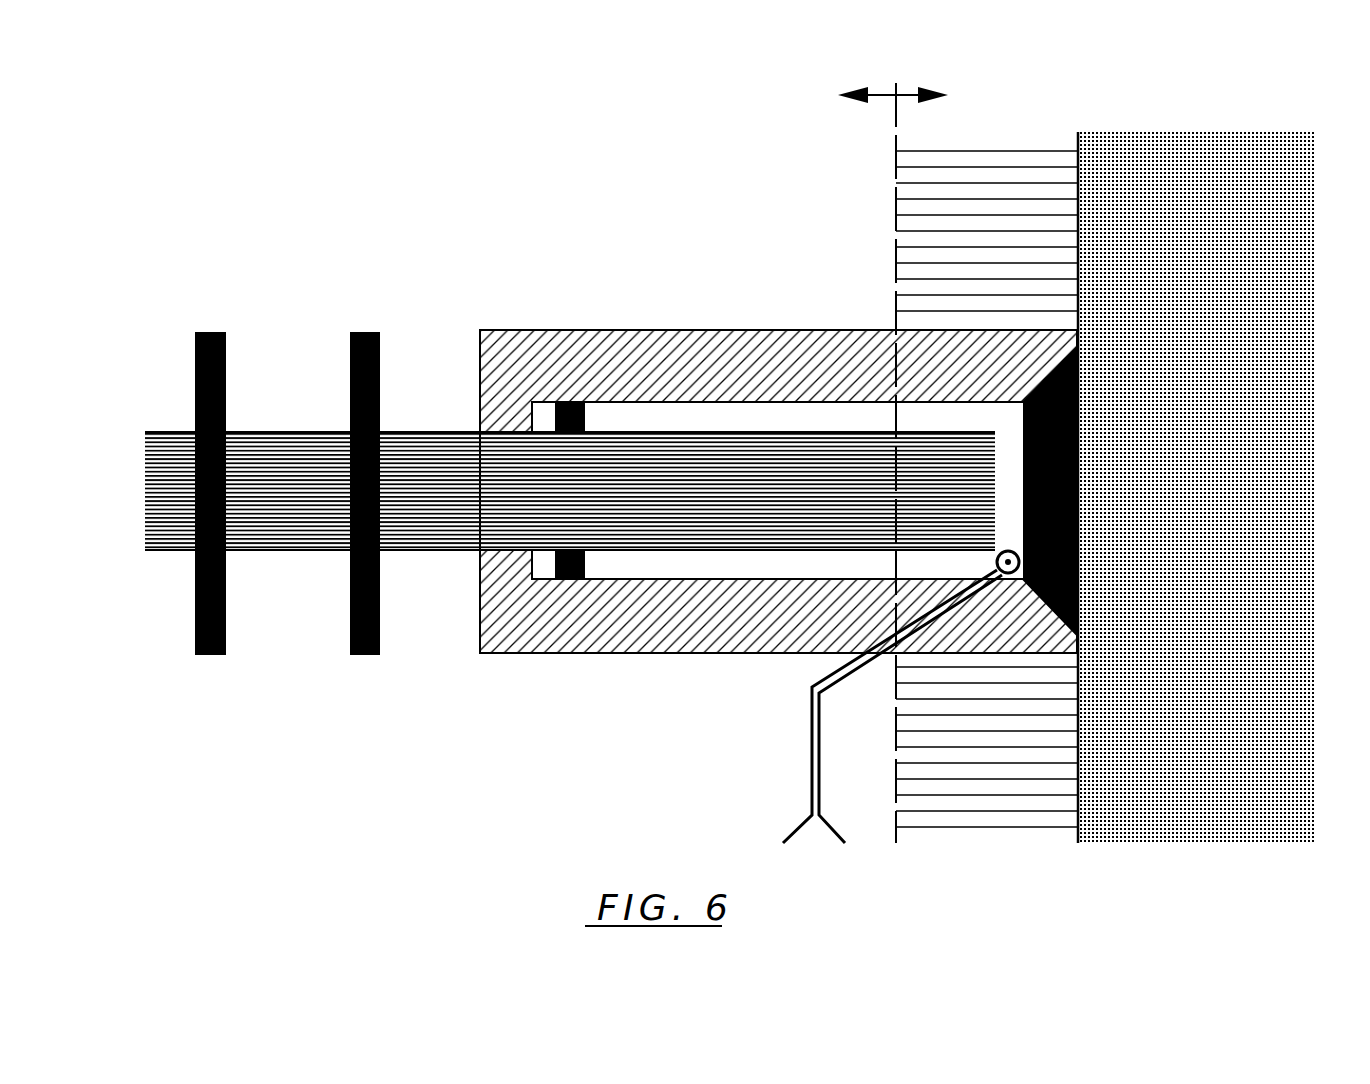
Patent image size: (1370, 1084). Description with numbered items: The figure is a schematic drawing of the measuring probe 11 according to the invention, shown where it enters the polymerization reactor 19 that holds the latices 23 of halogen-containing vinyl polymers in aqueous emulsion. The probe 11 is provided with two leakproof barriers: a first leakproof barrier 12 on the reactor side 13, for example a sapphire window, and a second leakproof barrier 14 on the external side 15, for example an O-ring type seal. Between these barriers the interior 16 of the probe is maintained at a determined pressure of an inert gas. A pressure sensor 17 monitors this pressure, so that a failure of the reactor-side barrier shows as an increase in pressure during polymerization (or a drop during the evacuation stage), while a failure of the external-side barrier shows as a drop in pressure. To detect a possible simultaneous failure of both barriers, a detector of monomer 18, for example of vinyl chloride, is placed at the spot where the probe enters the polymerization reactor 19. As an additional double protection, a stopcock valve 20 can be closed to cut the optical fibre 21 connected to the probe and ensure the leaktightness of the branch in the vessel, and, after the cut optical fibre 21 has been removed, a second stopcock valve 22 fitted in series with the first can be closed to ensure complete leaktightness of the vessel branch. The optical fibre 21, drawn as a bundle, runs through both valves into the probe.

The probe 11 is at (718, 363).
The first leakproof barrier 12 is at (1077, 552).
The reactor side 13 is at (931, 74).
The second leakproof barrier 14 is at (553, 402).
The external side 15 is at (859, 74).
The interior of the probe 16 is at (733, 563).
The pressure sensor 17 is at (890, 716).
The detector of monomer 18 is at (910, 728).
The polymerization reactor 19 is at (980, 191).
The stopcock valve 20 is at (362, 331).
The fiber bundle 21 is at (287, 500).
The second stopcock valve 22 is at (207, 331).
The latices 23 is at (1280, 215).